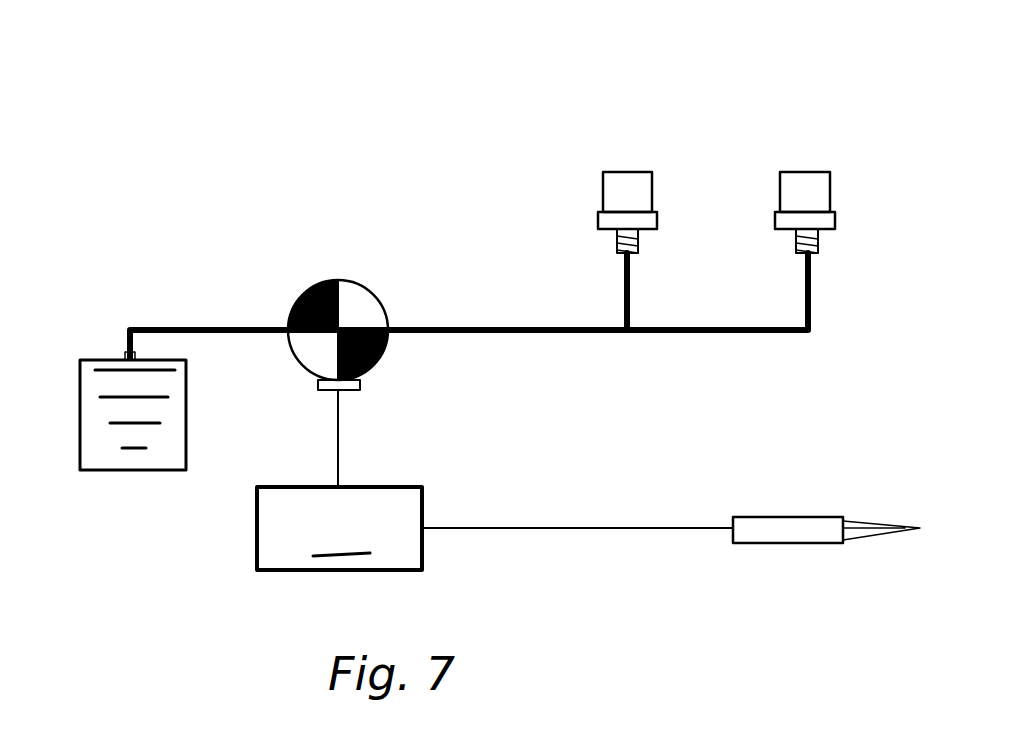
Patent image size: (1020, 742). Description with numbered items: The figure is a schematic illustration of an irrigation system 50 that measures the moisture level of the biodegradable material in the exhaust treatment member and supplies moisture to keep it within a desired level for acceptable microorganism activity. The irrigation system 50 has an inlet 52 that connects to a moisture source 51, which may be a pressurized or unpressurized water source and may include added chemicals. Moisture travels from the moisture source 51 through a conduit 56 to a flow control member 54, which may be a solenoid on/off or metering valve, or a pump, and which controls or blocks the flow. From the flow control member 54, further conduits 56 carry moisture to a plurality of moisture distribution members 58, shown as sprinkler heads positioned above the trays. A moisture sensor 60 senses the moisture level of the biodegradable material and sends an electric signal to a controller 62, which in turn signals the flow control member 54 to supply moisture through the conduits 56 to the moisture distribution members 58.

The irrigation system 50 is at (283, 205).
The moisture source 51 is at (93, 460).
The inlet 52 is at (127, 357).
The flow control member 54 is at (362, 300).
The conduit 56 is at (220, 326).
The moisture distribution member 58 is at (623, 178).
The moisture sensor 60 is at (783, 537).
The controller 62 is at (339, 528).